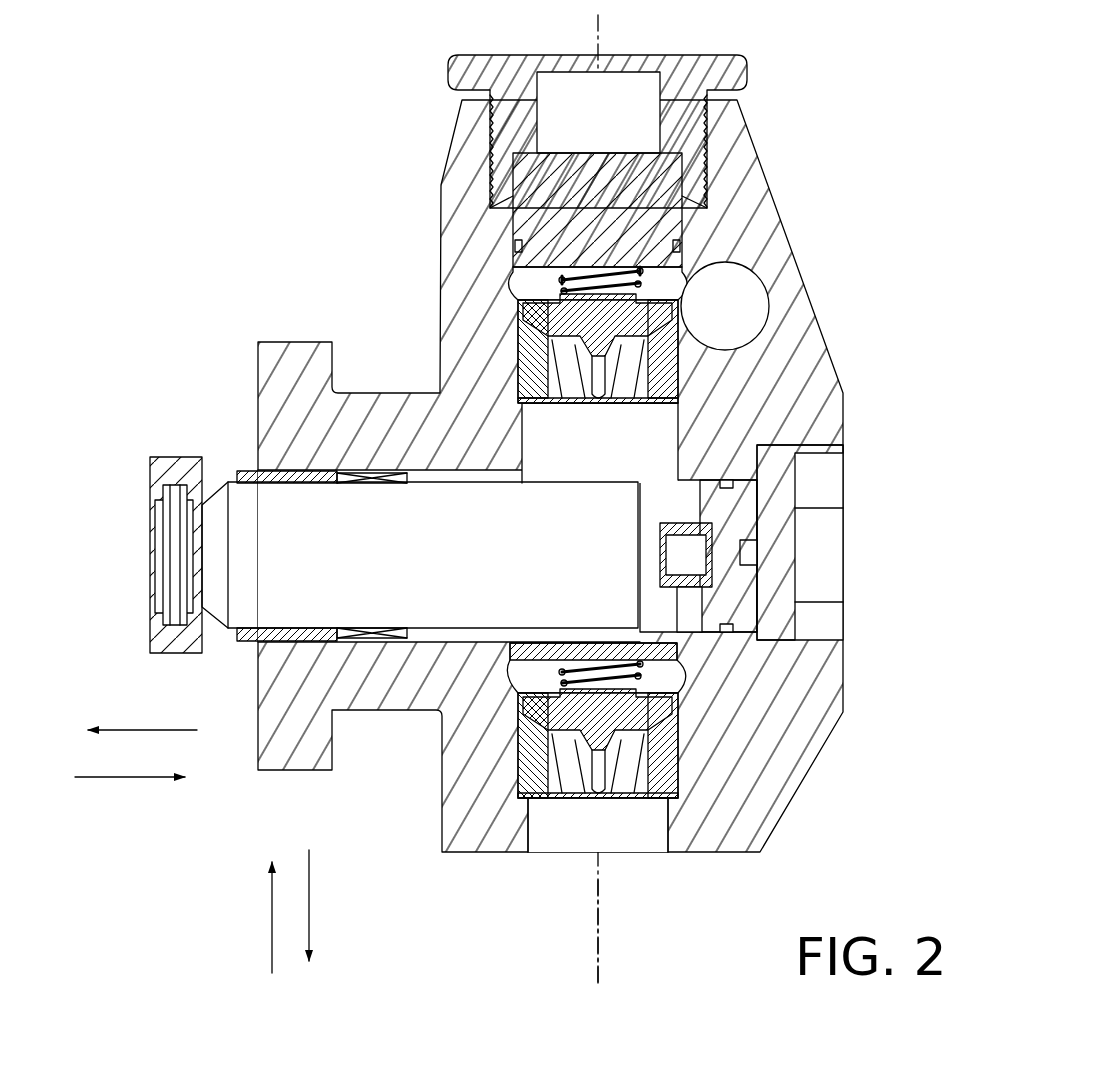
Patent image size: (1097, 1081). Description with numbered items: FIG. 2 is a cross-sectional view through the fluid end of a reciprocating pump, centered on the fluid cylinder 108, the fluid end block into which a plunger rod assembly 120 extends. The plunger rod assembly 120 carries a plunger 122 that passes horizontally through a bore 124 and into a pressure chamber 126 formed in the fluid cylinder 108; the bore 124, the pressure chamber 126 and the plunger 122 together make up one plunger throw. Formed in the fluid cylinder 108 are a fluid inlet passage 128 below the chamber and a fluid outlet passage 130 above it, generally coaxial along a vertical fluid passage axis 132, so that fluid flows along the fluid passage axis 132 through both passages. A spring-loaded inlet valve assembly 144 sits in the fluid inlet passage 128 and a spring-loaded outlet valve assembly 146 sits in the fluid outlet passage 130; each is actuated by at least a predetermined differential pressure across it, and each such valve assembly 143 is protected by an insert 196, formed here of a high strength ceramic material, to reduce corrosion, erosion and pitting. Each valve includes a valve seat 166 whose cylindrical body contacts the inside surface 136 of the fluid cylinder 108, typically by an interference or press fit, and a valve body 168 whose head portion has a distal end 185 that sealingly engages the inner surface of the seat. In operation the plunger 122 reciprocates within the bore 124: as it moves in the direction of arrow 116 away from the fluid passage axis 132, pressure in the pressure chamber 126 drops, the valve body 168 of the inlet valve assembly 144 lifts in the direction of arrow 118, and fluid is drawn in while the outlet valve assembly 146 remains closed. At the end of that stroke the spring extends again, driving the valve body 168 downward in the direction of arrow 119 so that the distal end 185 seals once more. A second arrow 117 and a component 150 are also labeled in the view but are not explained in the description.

The fluid cylinder 108 is at (830, 358).
The arrow 116 is at (175, 730).
The fluid flow direction 117 is at (112, 778).
The arrow 118 is at (272, 948).
The arrow 119 is at (309, 889).
The plunger rod assembly 120 is at (172, 457).
The plunger 122 is at (336, 537).
The bore 124 is at (432, 483).
The pressure chamber 126 is at (626, 472).
The fluid inlet passage 128 is at (523, 670).
The fluid outlet passage 130 is at (520, 278).
The fluid passage axis 132 is at (600, 920).
The inside surface 136 is at (528, 853).
The valve assembly 143 is at (700, 311).
The inlet valve assembly 144 is at (705, 632).
The outlet valve assembly 146 is at (684, 262).
The access plug 150 is at (742, 480).
The valve seat 166 is at (662, 788).
The valve body 168 is at (662, 665).
The distal end 185 is at (665, 735).
The insert 196 is at (523, 733).